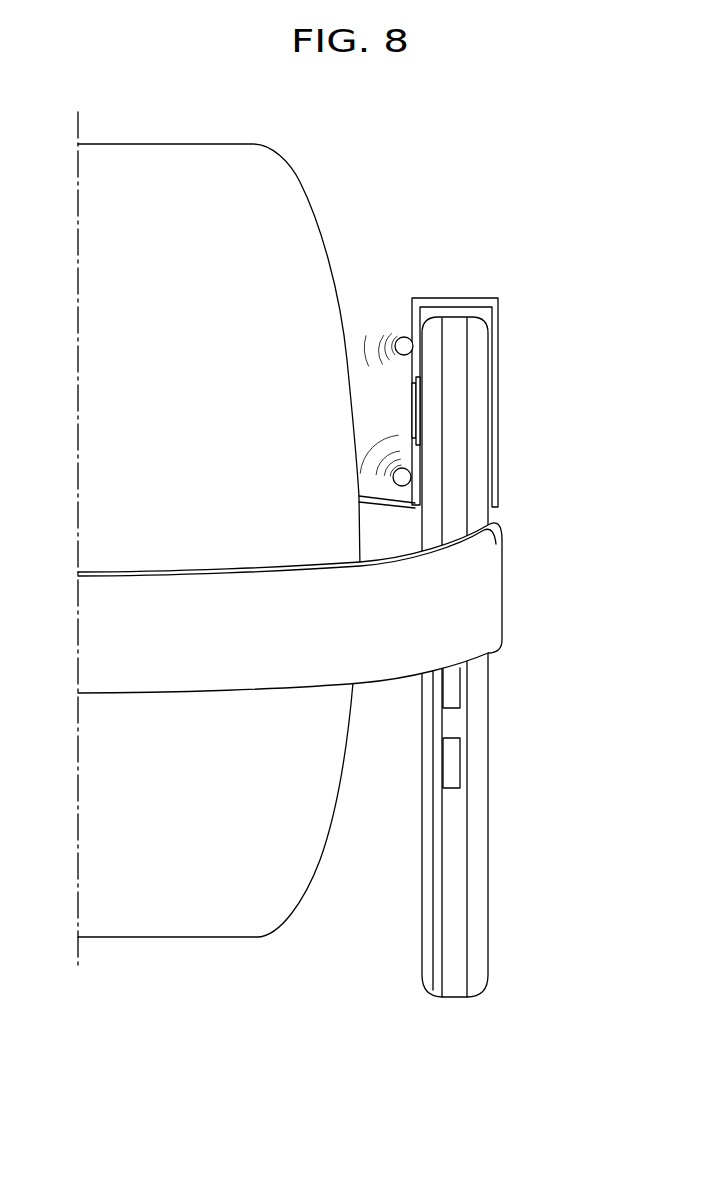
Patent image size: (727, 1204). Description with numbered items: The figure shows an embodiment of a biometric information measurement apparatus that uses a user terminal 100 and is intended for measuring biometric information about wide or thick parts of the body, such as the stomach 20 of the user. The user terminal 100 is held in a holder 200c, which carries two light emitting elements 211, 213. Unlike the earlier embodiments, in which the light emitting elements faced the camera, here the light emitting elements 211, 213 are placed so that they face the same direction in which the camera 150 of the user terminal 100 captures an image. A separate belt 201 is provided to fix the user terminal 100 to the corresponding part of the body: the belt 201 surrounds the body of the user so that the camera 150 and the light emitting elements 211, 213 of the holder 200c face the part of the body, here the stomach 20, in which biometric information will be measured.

The stomach 20 is at (297, 179).
The user terminal 100 is at (489, 751).
The camera 150 is at (412, 424).
The holder 200c is at (460, 298).
The belt 201 is at (502, 590).
The light emitting element 211 is at (399, 339).
The light emitting element 213 is at (402, 482).